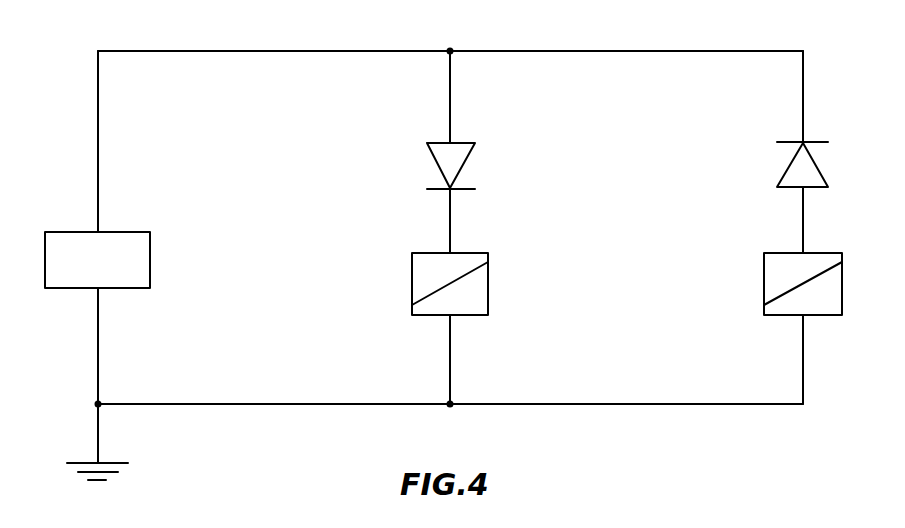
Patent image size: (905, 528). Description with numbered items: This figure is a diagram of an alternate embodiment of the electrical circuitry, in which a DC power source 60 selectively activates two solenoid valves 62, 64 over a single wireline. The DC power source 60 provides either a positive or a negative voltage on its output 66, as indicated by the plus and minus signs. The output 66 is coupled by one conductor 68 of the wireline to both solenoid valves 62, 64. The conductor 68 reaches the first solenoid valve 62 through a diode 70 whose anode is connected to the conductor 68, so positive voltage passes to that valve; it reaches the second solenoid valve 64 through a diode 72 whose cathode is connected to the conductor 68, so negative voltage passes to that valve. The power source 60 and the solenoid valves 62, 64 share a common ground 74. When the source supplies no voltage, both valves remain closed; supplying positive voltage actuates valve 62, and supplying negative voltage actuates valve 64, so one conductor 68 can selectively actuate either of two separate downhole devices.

The DC power source 60 is at (150, 252).
The solenoid valve 62 is at (412, 312).
The solenoid valve 64 is at (764, 303).
The output 66 is at (98, 181).
The conductor 68 is at (298, 53).
The diode 70 is at (432, 163).
The diode 72 is at (790, 162).
The common ground 74 is at (330, 405).